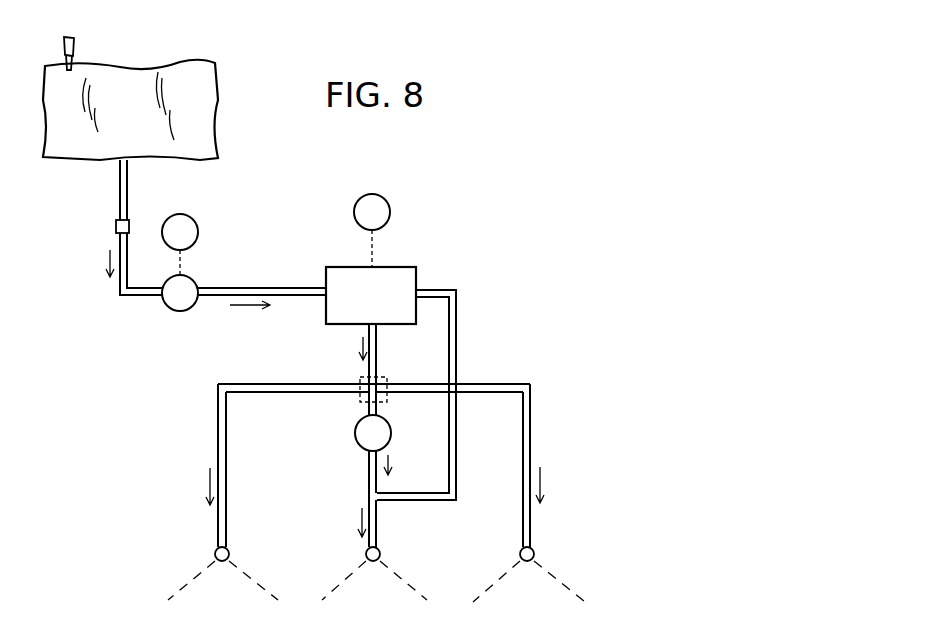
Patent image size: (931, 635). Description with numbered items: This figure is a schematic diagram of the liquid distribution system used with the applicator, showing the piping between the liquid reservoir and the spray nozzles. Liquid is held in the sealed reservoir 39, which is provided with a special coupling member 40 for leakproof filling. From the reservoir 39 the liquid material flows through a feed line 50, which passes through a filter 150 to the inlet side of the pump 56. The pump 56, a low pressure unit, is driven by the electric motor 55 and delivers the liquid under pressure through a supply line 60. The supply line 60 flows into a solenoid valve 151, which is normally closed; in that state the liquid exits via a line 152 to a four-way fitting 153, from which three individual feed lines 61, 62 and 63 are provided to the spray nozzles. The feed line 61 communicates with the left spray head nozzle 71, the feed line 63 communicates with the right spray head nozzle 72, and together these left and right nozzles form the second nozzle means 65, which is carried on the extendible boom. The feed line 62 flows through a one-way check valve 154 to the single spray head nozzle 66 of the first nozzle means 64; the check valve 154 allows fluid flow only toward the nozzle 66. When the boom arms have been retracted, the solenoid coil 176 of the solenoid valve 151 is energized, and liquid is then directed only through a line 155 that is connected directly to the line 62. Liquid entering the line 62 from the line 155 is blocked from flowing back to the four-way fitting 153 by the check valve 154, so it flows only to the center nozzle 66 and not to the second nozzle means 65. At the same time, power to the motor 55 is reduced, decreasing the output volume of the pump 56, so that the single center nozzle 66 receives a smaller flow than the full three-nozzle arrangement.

The reservoir 39 is at (178, 72).
The coupling member 40 is at (75, 42).
The feed line 50 is at (120, 190).
The filter 150 is at (116, 229).
The electric motor 55 is at (198, 230).
The pump 56 is at (185, 312).
The supply line 60 is at (265, 289).
The solenoid coil 176 is at (388, 213).
The solenoid valve 151 is at (396, 270).
The line 152 is at (378, 350).
The four-way fitting 153 is at (358, 405).
The one-way check valve 154 is at (362, 445).
The line 155 is at (457, 352).
The feed line 61 is at (228, 520).
The feed line 62 is at (378, 530).
The feed line 63 is at (532, 527).
The first nozzle means 64 is at (398, 557).
The second nozzle means 65 is at (208, 540).
The spray head nozzle 66 is at (365, 553).
The left spray head nozzle 71 is at (231, 553).
The right spray head nozzle 72 is at (522, 550).